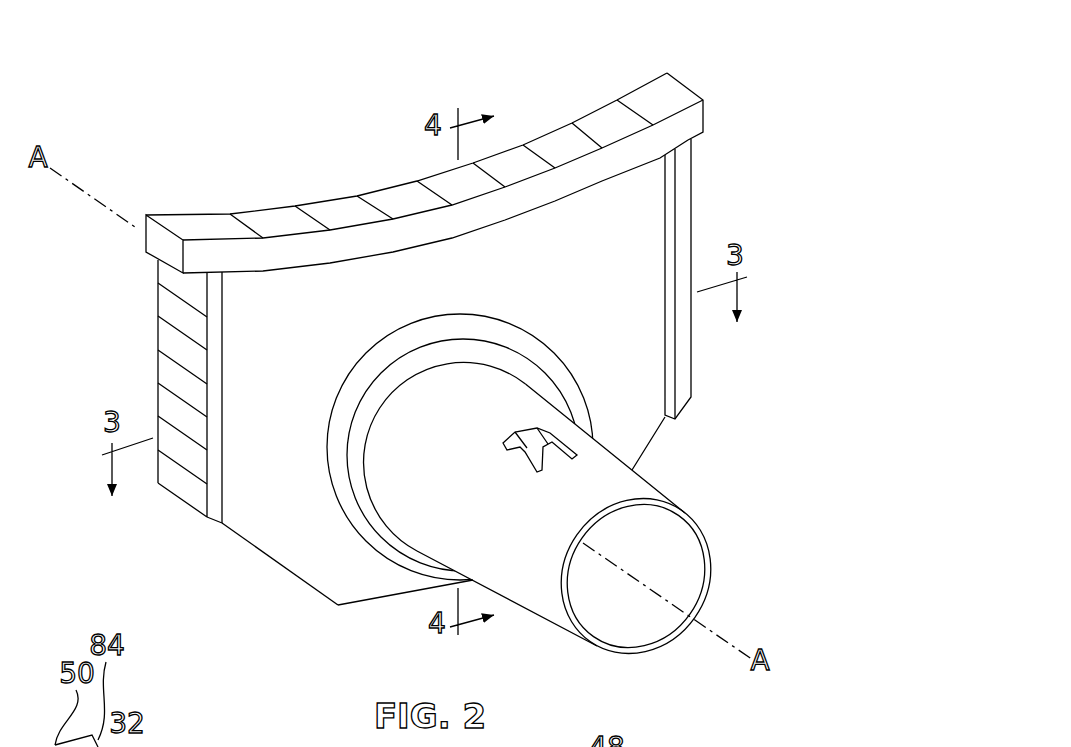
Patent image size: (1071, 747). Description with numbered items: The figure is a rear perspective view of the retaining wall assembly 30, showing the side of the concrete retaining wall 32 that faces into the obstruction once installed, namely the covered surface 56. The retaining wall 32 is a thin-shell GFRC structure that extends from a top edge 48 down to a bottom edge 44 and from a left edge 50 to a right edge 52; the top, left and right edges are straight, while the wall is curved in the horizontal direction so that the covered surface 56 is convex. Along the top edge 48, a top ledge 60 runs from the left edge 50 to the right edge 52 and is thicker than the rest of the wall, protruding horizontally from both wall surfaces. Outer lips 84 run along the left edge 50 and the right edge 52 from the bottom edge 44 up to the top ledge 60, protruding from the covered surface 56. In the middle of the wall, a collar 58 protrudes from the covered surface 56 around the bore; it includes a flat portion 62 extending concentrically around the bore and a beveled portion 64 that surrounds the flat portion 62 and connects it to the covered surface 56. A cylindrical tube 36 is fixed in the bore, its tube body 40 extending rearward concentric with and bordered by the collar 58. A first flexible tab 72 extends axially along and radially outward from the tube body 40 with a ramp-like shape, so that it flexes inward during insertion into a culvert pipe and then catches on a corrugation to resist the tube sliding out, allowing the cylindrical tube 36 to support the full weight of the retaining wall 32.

The retaining wall assembly 30 is at (600, 70).
The retaining wall 32 is at (256, 201).
The cylindrical tube 36 is at (667, 490).
The tube body 40 is at (540, 620).
The bottom edge 44 is at (297, 580).
The top edge 48 is at (540, 135).
The left edge 50 is at (692, 173).
The right edge 52 is at (170, 338).
The covered surface 56 is at (240, 507).
The collar 58 is at (500, 327).
The top ledge 60 is at (622, 155).
The flat portion 62 is at (405, 545).
The beveled portion 64 is at (370, 543).
The first flexible tab 72 is at (542, 430).
The outer lips 84 is at (213, 325).